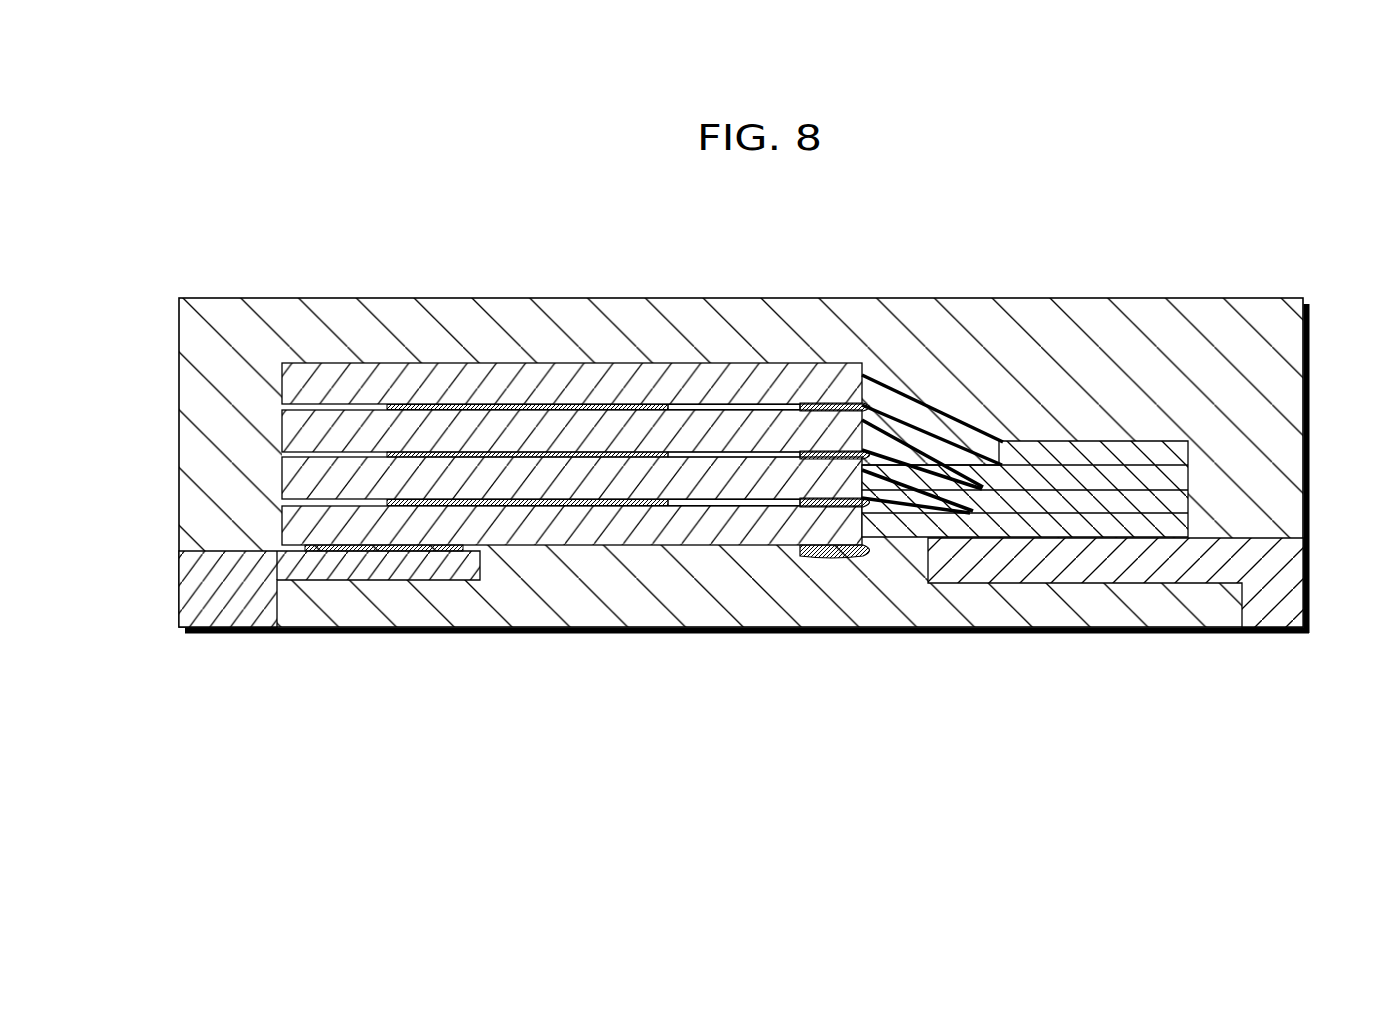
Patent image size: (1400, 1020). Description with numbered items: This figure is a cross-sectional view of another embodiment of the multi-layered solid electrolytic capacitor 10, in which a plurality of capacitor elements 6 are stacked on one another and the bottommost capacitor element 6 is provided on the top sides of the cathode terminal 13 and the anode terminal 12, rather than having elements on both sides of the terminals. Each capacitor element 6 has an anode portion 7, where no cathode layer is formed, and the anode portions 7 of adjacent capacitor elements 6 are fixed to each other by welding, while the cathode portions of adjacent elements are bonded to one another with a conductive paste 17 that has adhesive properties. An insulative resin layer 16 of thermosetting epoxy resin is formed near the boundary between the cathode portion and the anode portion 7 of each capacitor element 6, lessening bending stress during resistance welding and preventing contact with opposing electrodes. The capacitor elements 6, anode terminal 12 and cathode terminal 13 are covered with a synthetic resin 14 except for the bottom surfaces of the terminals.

The multi-layered solid electrolytic capacitor 10 is at (222, 232).
The synthetic resin 14 is at (180, 368).
The capacitor element 6 is at (272, 386).
The anode portion 7 is at (1128, 455).
The anode terminal 12 is at (1283, 581).
The cathode terminal 13 is at (200, 588).
The insulative resin layer 16 is at (820, 411).
The conductive paste 17 is at (632, 409).